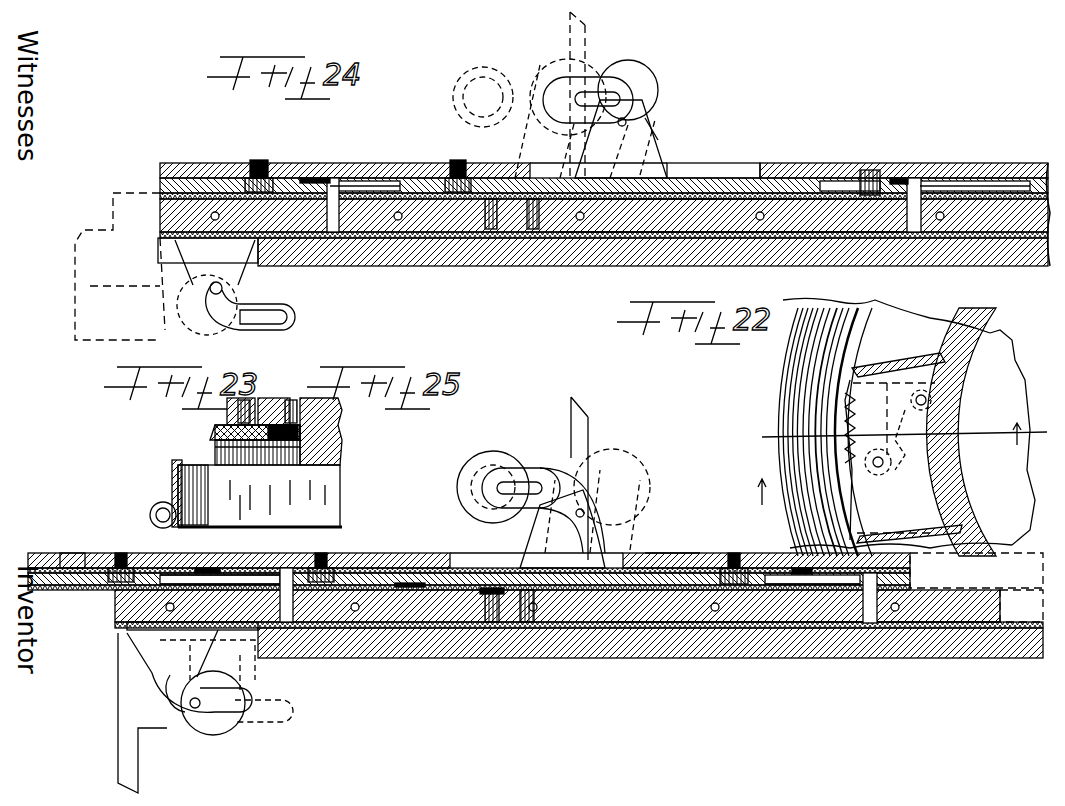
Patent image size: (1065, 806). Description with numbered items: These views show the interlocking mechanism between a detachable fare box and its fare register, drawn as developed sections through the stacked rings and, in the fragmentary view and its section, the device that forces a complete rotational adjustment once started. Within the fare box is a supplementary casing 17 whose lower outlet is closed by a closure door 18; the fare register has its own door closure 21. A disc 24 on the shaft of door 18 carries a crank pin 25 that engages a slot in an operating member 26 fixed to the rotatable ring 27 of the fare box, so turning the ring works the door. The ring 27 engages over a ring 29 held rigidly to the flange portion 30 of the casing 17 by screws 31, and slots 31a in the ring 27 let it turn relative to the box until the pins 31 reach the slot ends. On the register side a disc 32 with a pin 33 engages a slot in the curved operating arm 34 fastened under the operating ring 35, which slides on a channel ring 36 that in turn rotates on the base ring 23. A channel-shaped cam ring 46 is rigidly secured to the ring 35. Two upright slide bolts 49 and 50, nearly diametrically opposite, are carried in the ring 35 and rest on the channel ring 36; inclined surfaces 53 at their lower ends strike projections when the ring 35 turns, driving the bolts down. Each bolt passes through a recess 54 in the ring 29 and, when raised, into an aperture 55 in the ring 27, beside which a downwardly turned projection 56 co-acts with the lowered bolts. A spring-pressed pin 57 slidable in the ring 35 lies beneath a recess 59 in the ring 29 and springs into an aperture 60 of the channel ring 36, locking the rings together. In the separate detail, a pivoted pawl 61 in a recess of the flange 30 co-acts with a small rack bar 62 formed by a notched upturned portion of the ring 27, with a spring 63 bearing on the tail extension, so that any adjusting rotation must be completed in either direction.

In FIG. 23, the supplementary casing 17 is at (340, 440).
In FIG. 24, the closure door 18 is at (577, 95).
In FIG. 25, the closure door 18 is at (585, 437).
In FIG. 25, the door closure 21 is at (118, 760).
In FIG. 24, the base ring 23 is at (415, 268).
In FIG. 22, the base ring 23 is at (887, 464).
In FIG. 25, the base ring 23 is at (1030, 652).
In FIG. 24, the disc 24 is at (640, 82).
In FIG. 25, the disc 24 is at (482, 455).
In FIG. 24, the crank pin 25 is at (628, 118).
In FIG. 25, the crank pin 25 is at (520, 482).
In FIG. 24, the operating member 26 is at (652, 160).
In FIG. 25, the operating member 26 is at (587, 547).
In FIG. 24, the rotatable ring 27 is at (800, 183).
In FIG. 23, the rotatable ring 27 is at (322, 497).
In FIG. 25, the rotatable ring 27 is at (468, 568).
In FIG. 24, the ring 29 is at (738, 190).
In FIG. 24, the flange portion 30 is at (880, 178).
In FIG. 23, the flange portion 30 is at (238, 398).
In FIG. 25, the flange portion 30 is at (68, 553).
In FIG. 24, the screws 31 is at (262, 165).
In FIG. 25, the screws 31 is at (121, 553).
In FIG. 25, the slots 31a is at (690, 560).
In FIG. 25, the disc 32 is at (238, 722).
In FIG. 24, the pin 33 is at (224, 290).
In FIG. 25, the pin 33 is at (195, 710).
In FIG. 24, the curved operating arm 34 is at (292, 312).
In FIG. 25, the curved operating arm 34 is at (150, 655).
In FIG. 24, the operating ring 35 is at (605, 222).
In FIG. 25, the operating ring 35 is at (1021, 606).
In FIG. 24, the channel ring 36 is at (660, 238).
In FIG. 25, the channel ring 36 is at (1000, 632).
In FIG. 24, the cam ring 46 is at (790, 205).
In FIG. 25, the cam ring 46 is at (688, 590).
In FIG. 24, the slide bolt 49 is at (915, 232).
In FIG. 25, the slide bolt 49 is at (870, 620).
In FIG. 24, the slide bolt 50 is at (338, 234).
In FIG. 25, the slide bolt 50 is at (290, 612).
In FIG. 25, the inclined surfaces 53 is at (240, 575).
In FIG. 25, the recess 54 is at (290, 573).
In FIG. 24, the recess or aperture 55 is at (355, 186).
In FIG. 25, the recess or aperture 55 is at (805, 572).
In FIG. 24, the downwardly turned projection 56 is at (320, 182).
In FIG. 25, the downwardly turned projection 56 is at (205, 573).
In FIG. 24, the pin 57 is at (532, 232).
In FIG. 25, the pin 57 is at (492, 625).
In FIG. 25, the recess 59 is at (410, 583).
In FIG. 24, the aperture 60 is at (492, 232).
In FIG. 23, the pivoted pawl 61 is at (222, 432).
In FIG. 22, the pivoted pawl 61 is at (842, 408).
In FIG. 23, the rack bar 62 is at (212, 452).
In FIG. 22, the rack bar 62 is at (845, 442).
In FIG. 23, the spring 63 is at (280, 410).